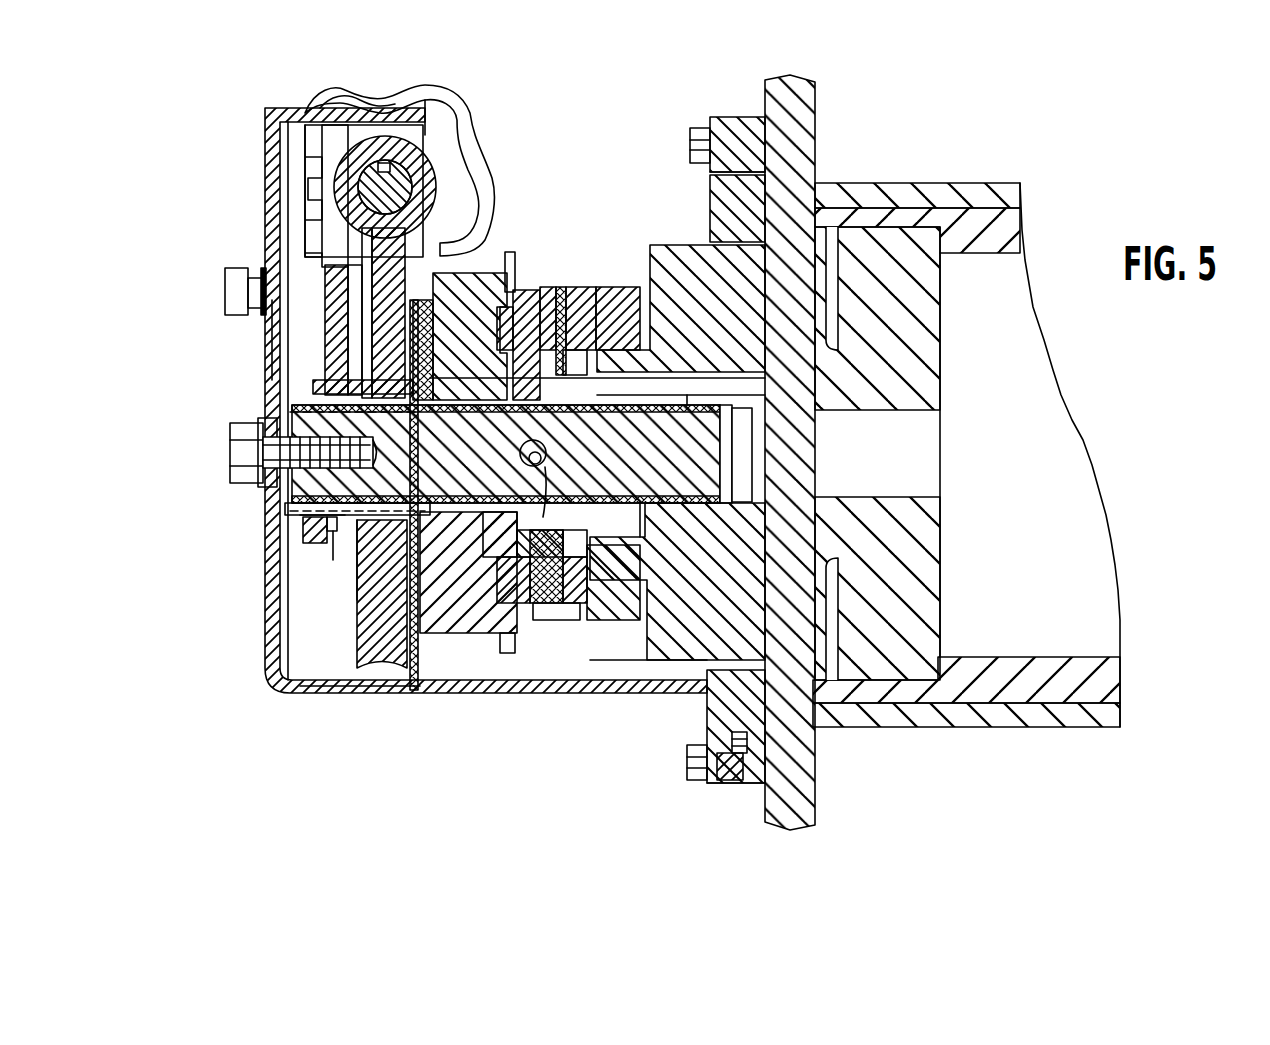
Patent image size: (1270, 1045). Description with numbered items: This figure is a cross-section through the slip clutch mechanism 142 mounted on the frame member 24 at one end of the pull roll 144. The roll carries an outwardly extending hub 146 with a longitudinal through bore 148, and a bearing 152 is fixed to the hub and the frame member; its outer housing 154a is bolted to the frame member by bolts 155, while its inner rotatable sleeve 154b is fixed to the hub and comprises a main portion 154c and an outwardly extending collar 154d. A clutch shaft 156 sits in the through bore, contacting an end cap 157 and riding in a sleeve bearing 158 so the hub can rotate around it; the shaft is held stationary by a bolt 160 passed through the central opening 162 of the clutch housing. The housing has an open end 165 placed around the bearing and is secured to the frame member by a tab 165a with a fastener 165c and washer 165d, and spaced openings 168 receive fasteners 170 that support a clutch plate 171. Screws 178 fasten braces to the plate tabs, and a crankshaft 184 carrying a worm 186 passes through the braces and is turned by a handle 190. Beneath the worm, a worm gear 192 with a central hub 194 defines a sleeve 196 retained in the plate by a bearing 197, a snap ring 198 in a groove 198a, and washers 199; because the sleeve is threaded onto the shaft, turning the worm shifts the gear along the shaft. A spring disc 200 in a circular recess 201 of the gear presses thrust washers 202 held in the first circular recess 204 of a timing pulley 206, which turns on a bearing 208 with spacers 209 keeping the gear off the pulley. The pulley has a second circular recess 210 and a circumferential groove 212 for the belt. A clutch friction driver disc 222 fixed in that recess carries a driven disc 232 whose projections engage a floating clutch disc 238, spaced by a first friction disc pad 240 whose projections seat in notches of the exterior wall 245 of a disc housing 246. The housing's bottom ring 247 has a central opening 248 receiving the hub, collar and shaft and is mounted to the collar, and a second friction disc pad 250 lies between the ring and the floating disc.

The frame member 24 is at (792, 136).
The slip clutch mechanism 142 is at (245, 97).
The pull roll 144 is at (960, 182).
The hub 146 is at (940, 342).
The through bore 148 is at (935, 496).
The bearing 152 is at (686, 197).
The outer housing 154a is at (736, 136).
The inner rotatable sleeve 154b is at (786, 250).
The main portion 154c is at (742, 576).
The collar 154d is at (622, 536).
The bolts 155 is at (698, 128).
The clutch shaft 156 is at (700, 456).
The end cap 157 is at (745, 478).
The bearing 158 is at (692, 398).
The bolt 160 is at (235, 452).
The central opening 162 is at (266, 416).
The open end 165 is at (450, 114).
The tab 165a is at (757, 790).
The fastener 165c is at (731, 773).
The washer 165d is at (760, 772).
The spaced openings 168 is at (262, 276).
The fasteners 170 is at (232, 292).
The clutch plate 171 is at (278, 335).
The screws 178 is at (313, 230).
The crankshaft 184 is at (438, 172).
The worm 186 is at (406, 186).
The handle 190 is at (337, 97).
The worm gear 192 is at (332, 680).
The central hub 194 is at (376, 600).
The central sleeve 196 is at (290, 506).
The bearing 197 is at (334, 532).
The snap ring 198 is at (306, 530).
The groove 198a is at (302, 516).
The washers 199 is at (341, 556).
The spring disc 200 is at (396, 335).
The circular recess 201 is at (370, 596).
The thrust washers 202 is at (414, 680).
The first circular recess 204 is at (486, 248).
The timing pulley 206 is at (510, 242).
The bearing 208 is at (470, 482).
The spacers 209 is at (370, 395).
The second circular recess 210 is at (497, 508).
The circumferential groove 212 is at (441, 636).
The clutch friction driver disc 222 is at (524, 283).
The driven disc 232 is at (548, 459).
The floating clutch disc 238 is at (546, 622).
The first friction disc pad 240 is at (535, 606).
The exterior wall 245 is at (562, 606).
The disc housing 246 is at (631, 642).
The bottom ring 247 is at (627, 307).
The central opening 248 is at (598, 307).
The second friction disc pad 250 is at (570, 616).